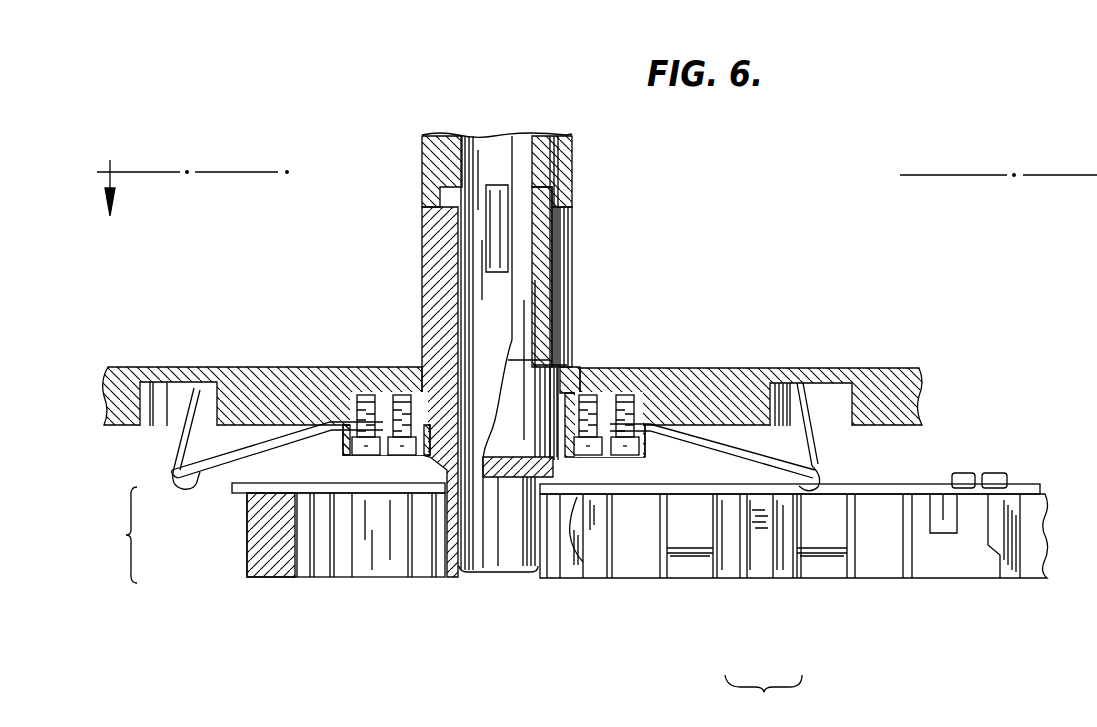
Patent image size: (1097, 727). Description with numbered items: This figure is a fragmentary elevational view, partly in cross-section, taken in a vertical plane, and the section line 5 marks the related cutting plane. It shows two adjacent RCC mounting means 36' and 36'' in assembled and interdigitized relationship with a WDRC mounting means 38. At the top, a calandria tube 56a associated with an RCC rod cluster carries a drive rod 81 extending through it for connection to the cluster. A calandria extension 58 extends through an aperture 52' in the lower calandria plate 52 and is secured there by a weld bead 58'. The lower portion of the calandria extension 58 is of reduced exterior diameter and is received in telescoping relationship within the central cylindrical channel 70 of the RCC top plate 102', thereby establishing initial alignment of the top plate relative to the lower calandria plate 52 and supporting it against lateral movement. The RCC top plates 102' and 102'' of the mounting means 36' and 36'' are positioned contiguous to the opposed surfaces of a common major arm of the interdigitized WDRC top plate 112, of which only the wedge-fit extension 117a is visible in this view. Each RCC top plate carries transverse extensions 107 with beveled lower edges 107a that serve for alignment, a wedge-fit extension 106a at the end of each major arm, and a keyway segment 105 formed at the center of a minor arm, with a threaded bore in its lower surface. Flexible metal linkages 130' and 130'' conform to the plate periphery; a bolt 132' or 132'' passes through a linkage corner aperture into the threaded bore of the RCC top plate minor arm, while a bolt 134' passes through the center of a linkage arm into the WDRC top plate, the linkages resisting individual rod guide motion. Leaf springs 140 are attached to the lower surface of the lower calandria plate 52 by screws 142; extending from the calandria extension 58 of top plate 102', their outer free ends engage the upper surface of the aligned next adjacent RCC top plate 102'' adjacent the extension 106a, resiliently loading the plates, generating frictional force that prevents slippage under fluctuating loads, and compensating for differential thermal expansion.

The section line 5— 5 is at (591, 189).
The drive rod 81 is at (479, 200).
The calandria tube 56a is at (560, 163).
The calandria extension 58 is at (584, 287).
The weld bead 58' is at (588, 390).
The lower calandria plate 52 is at (536, 406).
The aperture 52' is at (466, 382).
The screws 142 is at (397, 395).
The leaf springs 140 is at (183, 493).
The bolt 134' is at (712, 454).
The linkage 130' is at (338, 476).
The linkage 130'' is at (790, 467).
The bolt 132' is at (394, 472).
The bolt 132'' is at (997, 464).
The RCC mounting means 36' is at (271, 535).
The RCC mounting means 36'' is at (807, 583).
The RCC top plate 102' is at (223, 605).
The RCC top plate 102'' is at (963, 600).
The cylindrical channel 70 is at (467, 555).
The keyway segment 105 is at (573, 522).
The transverse extensions 107 is at (703, 534).
The beveled lower edges 107a is at (685, 556).
The wedge-fit extension 106a is at (745, 574).
The wedge-fit extension 117a is at (752, 556).
The WDRC top plate 112 is at (747, 580).
The WDRC mounting means 38 is at (763, 695).